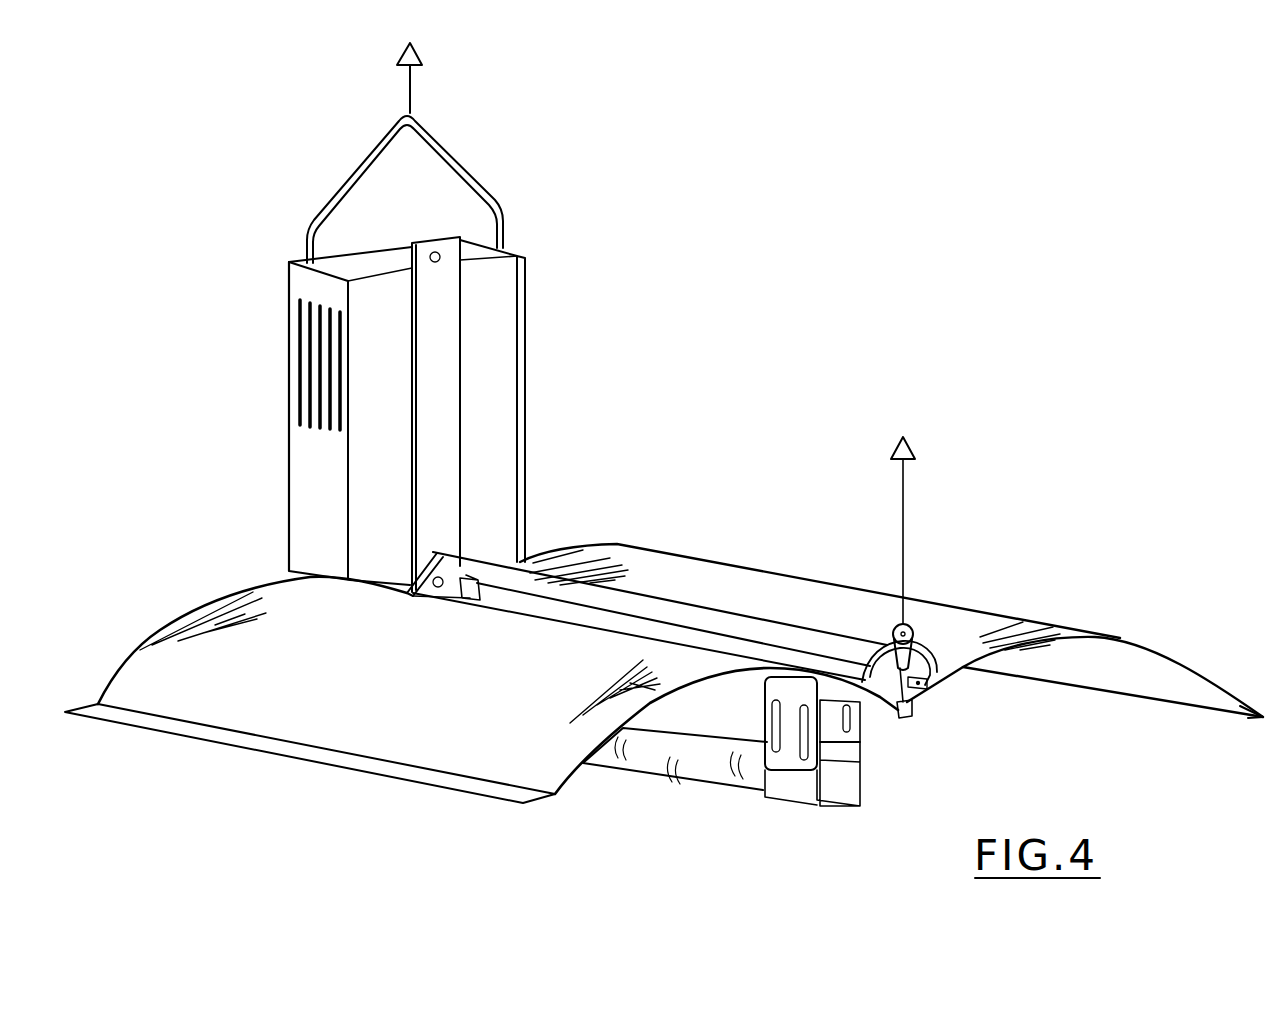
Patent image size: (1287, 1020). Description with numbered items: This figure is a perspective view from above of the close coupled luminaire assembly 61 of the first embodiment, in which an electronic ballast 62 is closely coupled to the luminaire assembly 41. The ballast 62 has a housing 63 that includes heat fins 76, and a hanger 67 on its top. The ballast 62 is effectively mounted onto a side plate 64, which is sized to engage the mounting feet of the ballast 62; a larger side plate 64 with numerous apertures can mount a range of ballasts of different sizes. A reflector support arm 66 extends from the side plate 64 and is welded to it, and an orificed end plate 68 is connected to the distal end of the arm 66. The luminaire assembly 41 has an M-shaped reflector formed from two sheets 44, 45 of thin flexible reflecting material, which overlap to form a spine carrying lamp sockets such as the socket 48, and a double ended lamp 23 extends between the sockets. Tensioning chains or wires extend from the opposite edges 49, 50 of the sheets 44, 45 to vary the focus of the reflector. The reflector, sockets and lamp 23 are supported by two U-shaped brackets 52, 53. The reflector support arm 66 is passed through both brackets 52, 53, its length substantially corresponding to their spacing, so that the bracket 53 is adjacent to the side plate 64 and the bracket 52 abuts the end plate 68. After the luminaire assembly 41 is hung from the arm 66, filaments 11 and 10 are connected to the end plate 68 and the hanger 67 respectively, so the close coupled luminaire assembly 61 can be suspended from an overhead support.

The filament 10 is at (410, 92).
The filament 11 is at (906, 570).
The double ended lamp 23 is at (710, 767).
The luminaire assembly 41 is at (772, 598).
The sheet 44 is at (447, 745).
The sheet 45 is at (1140, 677).
The lamp socket 48 is at (837, 797).
The edge 49 is at (186, 730).
The edge 50 is at (1258, 708).
The U-shaped bracket 52 is at (950, 658).
The U-shaped bracket 53 is at (403, 590).
The close coupled luminaire assembly 61 is at (888, 377).
The electronic ballast 62 is at (386, 372).
The housing 63 is at (507, 412).
The side plate 64 is at (450, 401).
The reflector support arm 66 is at (640, 598).
The hanger 67 is at (480, 186).
The orificed end plate 68 is at (907, 708).
The heat fins 76 is at (318, 362).